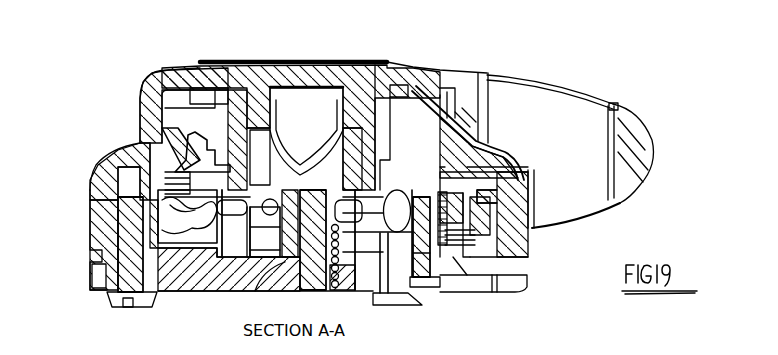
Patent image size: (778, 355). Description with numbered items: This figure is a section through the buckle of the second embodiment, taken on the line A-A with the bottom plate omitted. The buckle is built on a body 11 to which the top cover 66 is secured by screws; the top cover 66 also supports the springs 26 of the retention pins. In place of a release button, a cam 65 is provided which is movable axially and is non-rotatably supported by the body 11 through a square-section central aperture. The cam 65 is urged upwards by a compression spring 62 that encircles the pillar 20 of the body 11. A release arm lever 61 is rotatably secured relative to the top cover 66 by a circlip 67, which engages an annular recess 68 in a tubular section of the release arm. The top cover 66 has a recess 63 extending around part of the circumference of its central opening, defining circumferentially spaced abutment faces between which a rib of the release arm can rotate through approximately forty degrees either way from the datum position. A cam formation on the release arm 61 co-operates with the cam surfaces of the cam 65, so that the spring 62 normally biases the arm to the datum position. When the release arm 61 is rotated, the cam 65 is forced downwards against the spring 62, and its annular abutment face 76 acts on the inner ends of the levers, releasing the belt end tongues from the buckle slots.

The recess 63 is at (215, 128).
The annular recess 68 is at (216, 64).
The cam 65 is at (353, 140).
The circlip 67 is at (393, 175).
The release arm lever 61 is at (537, 103).
The top cover 66 is at (98, 197).
The compression spring 62 is at (285, 294).
The pillar 20 is at (305, 245).
The annular abutment face 76 is at (366, 295).
The springs 26 is at (503, 175).
The body 11 is at (520, 240).